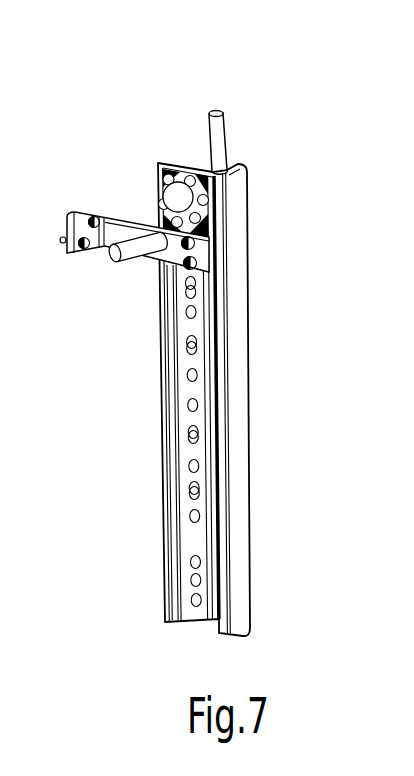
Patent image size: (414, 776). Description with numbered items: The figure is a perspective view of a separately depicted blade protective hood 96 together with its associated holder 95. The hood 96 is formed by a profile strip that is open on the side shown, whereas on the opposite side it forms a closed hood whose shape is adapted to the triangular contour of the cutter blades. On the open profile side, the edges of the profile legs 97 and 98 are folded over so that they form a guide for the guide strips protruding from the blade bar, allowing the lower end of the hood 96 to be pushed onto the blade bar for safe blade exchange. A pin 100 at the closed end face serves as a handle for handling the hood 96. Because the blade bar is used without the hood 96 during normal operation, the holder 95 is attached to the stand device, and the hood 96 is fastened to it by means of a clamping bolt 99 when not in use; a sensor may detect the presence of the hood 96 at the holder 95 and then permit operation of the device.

The holder 95 is at (120, 225).
The blade protective hood 96 is at (233, 377).
The profile leg 97 is at (215, 460).
The profile leg 98 is at (165, 480).
The clamping bolt 99 is at (177, 195).
The pin 100 is at (218, 140).